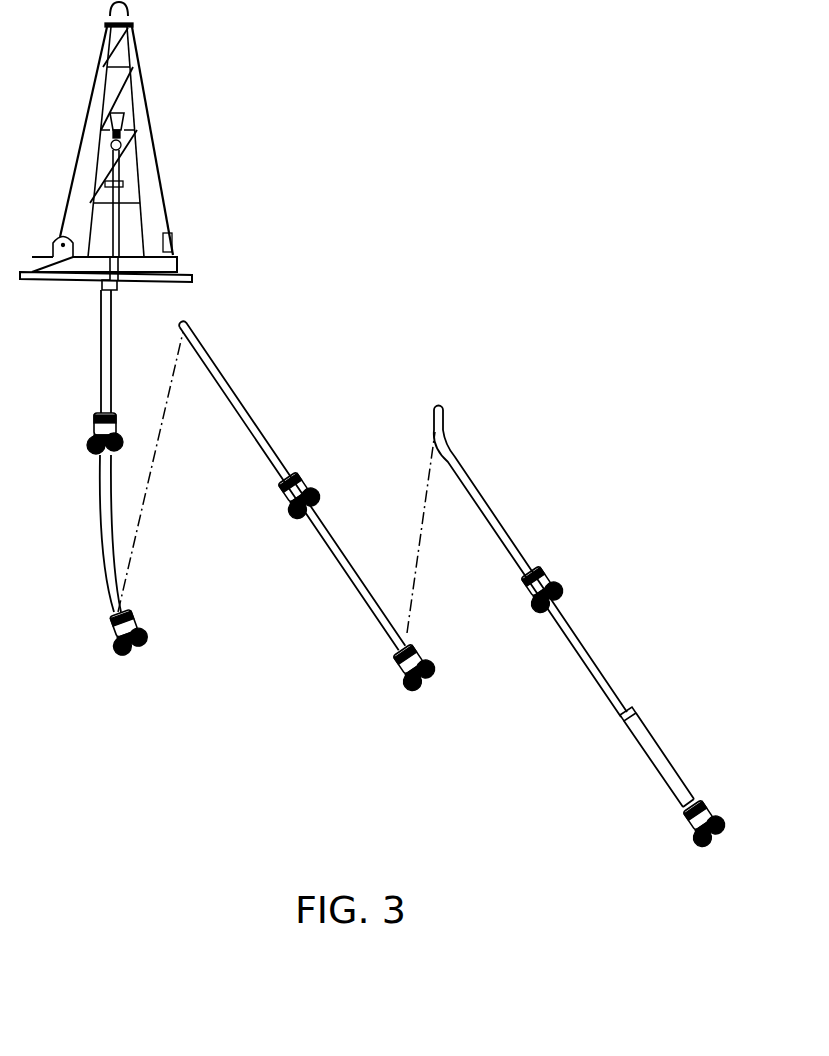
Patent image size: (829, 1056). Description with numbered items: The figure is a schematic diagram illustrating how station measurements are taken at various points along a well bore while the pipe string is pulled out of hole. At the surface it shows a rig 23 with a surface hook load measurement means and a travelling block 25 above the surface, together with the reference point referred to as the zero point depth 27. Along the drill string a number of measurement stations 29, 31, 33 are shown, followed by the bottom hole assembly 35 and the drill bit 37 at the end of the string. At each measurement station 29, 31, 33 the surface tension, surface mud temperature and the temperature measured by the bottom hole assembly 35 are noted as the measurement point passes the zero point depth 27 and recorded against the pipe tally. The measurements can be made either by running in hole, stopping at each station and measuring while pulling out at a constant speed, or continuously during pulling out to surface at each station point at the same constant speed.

The rig 23 is at (158, 165).
The travelling block 25 is at (123, 120).
The zero point depth 27 is at (182, 259).
The measurement station 29 is at (90, 432).
The measurement station 31 is at (143, 632).
The measurement station 33 is at (423, 677).
The bottom hole assembly 35 is at (667, 758).
The drill bit 37 is at (722, 813).